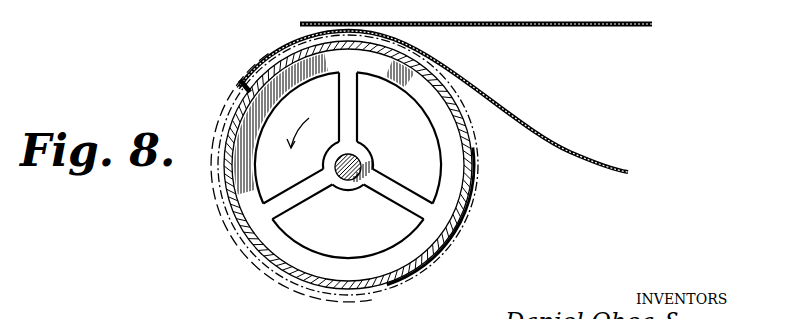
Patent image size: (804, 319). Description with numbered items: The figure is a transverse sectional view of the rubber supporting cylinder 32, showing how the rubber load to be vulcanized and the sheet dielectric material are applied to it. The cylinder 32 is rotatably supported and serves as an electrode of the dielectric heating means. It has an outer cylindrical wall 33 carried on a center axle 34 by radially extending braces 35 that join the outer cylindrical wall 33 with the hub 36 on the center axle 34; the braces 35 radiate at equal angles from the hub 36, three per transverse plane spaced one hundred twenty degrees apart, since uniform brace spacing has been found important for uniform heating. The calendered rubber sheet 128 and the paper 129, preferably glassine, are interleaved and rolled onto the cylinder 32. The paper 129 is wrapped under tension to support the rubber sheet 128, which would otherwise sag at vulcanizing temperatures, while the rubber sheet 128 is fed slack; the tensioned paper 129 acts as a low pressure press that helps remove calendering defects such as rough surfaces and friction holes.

The cylinder 32 is at (470, 183).
The outer cylindrical wall 33 is at (466, 208).
The center axle 34 is at (351, 181).
The radial braces 35 is at (389, 186).
The hub 36 is at (366, 156).
The calendered rubber sheet 128 is at (549, 147).
The paper 129 is at (500, 22).